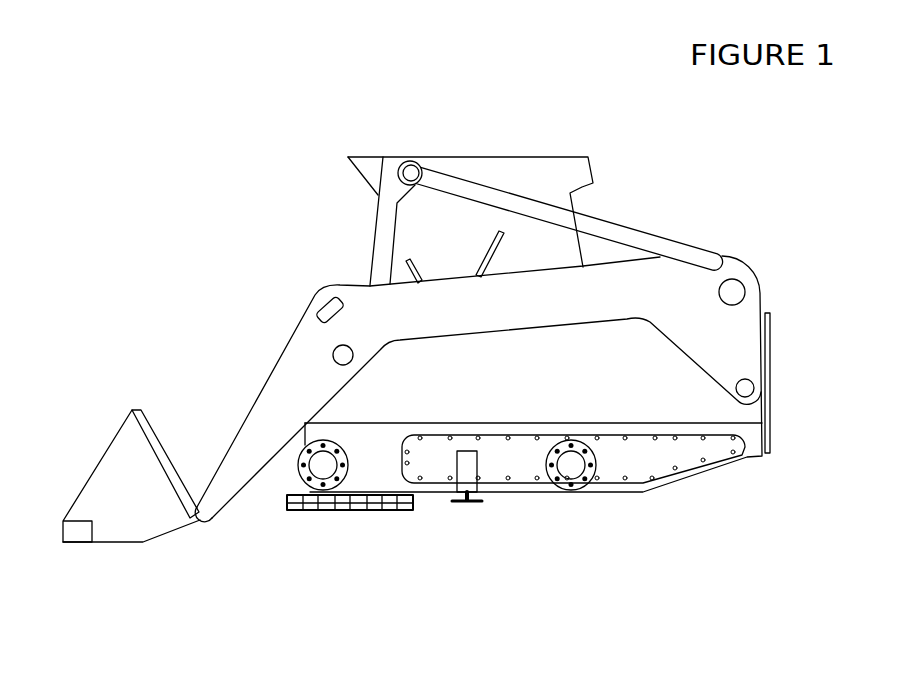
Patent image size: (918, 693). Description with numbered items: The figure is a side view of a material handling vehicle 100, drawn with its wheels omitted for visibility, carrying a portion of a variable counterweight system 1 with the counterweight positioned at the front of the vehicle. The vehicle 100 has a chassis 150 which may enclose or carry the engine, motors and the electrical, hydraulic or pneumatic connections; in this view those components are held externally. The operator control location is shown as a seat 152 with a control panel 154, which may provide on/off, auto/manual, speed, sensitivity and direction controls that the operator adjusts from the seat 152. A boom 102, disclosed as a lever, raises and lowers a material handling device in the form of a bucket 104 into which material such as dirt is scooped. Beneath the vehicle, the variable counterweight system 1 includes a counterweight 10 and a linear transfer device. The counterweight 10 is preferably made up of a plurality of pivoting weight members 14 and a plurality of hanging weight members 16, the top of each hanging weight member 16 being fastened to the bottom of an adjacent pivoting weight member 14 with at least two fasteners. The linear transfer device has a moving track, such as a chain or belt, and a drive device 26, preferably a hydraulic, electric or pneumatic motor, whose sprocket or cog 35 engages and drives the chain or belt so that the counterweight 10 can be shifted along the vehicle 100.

The variable counterweight system 1 is at (356, 507).
The counterweight 10 is at (350, 525).
The pivoting weight members 14 is at (343, 498).
The hanging weight members 16 is at (307, 510).
The drive device 26 is at (473, 455).
The sprocket or cog 35 is at (457, 504).
The material handling vehicle 100 is at (444, 370).
The boom 102 is at (268, 413).
The bucket 104 is at (130, 458).
The chassis 150 is at (773, 452).
The seat 152 is at (482, 233).
The control panel 154 is at (403, 277).